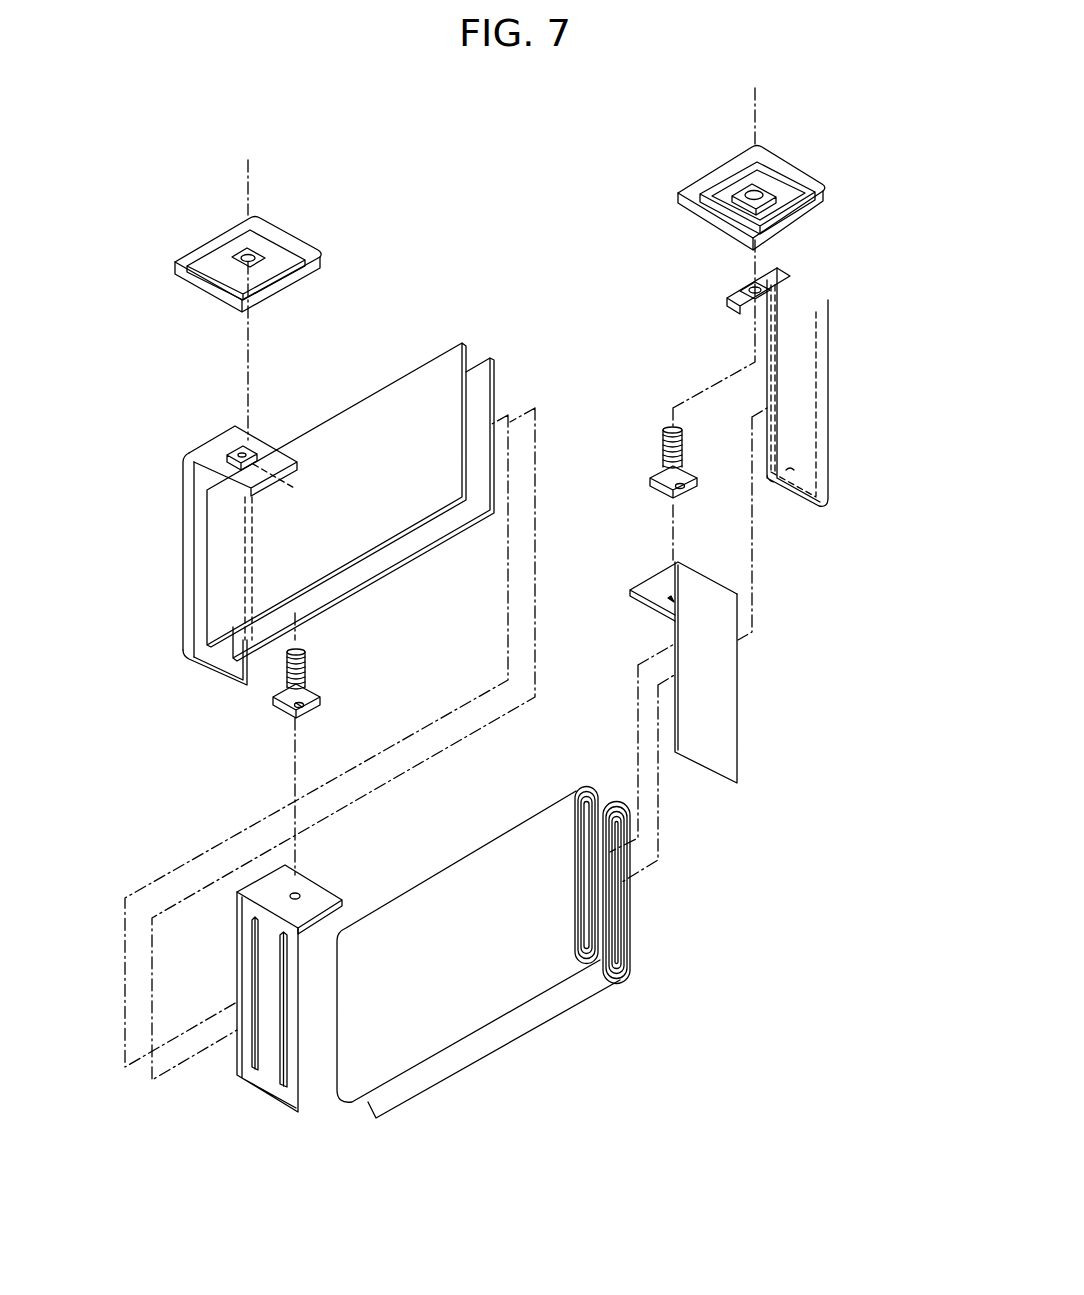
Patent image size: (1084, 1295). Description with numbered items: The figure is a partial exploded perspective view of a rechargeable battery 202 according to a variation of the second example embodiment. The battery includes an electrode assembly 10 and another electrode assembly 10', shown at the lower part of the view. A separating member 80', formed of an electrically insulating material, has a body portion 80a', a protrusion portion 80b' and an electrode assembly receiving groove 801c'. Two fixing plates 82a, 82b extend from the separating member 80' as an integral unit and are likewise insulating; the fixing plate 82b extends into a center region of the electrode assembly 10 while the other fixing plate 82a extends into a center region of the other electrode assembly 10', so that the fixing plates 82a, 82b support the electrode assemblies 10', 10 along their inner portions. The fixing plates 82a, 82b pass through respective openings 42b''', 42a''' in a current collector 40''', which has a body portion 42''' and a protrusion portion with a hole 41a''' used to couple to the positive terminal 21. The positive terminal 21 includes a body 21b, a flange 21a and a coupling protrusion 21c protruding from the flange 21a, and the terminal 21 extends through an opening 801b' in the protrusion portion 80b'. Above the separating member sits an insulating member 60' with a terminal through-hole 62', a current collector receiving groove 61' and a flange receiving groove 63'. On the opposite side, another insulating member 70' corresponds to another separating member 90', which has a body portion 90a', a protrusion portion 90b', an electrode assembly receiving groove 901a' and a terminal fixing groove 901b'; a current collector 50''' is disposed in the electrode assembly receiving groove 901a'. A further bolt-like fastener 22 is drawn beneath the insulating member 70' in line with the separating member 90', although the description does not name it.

The rechargeable battery 202 is at (492, 187).
The electrode assembly 10 is at (521, 953).
The another electrode assembly 10' is at (478, 954).
The positive terminal 21 is at (321, 718).
The flange 21a is at (321, 700).
The body 21b is at (307, 664).
The coupling protrusion 21c is at (300, 712).
The fastening bolt 22 is at (651, 454).
The current collector 40''' is at (280, 1019).
The hole 41a''' is at (341, 873).
The body portion 42''' is at (262, 1029).
The opening 42a''' is at (315, 1063).
The opening 42b''' is at (256, 1040).
The current collector 50''' is at (727, 672).
The insulating member 60' is at (240, 273).
The current collector receiving groove 61' is at (248, 284).
The terminal through-hole 62' is at (257, 280).
The flange receiving groove 63' is at (263, 303).
The another insulating member 70' is at (751, 173).
The separating member 80' is at (209, 552).
The body portion 80a' is at (158, 555).
The protrusion portion 80b' is at (218, 455).
The opening 801b' is at (222, 423).
The electrode assembly receiving groove 801c' is at (209, 684).
The fixing plate 82a is at (429, 344).
The fixing plate 82b is at (486, 344).
The another separating member 90' is at (776, 407).
The body portion 90a' is at (834, 387).
The protrusion portion 90b' is at (721, 290).
The electrode assembly receiving groove 901a' is at (797, 505).
The terminal fixing groove 901b' is at (710, 309).